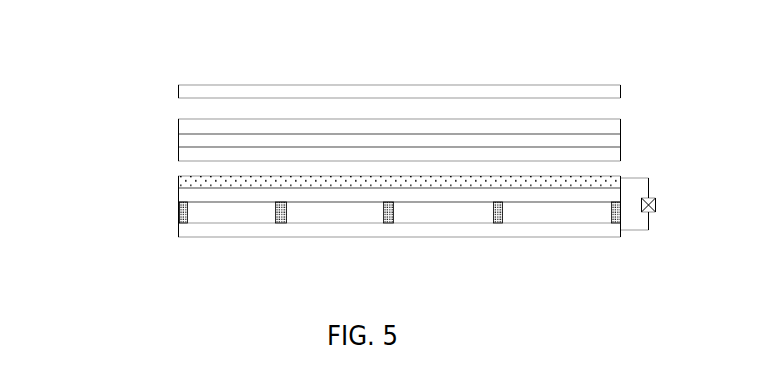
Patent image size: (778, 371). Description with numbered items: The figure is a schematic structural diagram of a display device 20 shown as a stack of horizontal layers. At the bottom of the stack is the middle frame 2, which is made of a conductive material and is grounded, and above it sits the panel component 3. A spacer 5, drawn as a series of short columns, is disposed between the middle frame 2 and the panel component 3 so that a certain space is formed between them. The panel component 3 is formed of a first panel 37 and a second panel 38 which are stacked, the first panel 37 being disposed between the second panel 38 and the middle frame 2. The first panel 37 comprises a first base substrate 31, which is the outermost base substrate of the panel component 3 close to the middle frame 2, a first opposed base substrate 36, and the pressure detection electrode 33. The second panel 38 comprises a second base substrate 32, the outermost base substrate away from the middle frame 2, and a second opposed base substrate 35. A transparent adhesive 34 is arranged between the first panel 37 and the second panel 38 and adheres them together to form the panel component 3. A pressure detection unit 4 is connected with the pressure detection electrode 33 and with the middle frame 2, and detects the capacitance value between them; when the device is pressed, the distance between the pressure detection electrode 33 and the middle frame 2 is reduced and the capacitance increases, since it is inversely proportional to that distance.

The display device 20 is at (210, 48).
The panel component 3 is at (44, 120).
The second panel 38 is at (87, 90).
The first panel 37 is at (87, 150).
The second base substrate 32 is at (192, 92).
The second opposed base substrate 35 is at (192, 127).
The transparent adhesive 34 is at (599, 138).
The first opposed base substrate 36 is at (192, 154).
The pressure detection electrode 33 is at (192, 180).
The first base substrate 31 is at (194, 196).
The middle frame 2 is at (268, 232).
The spacer 5 is at (184, 223).
The pressure detection unit 4 is at (655, 205).